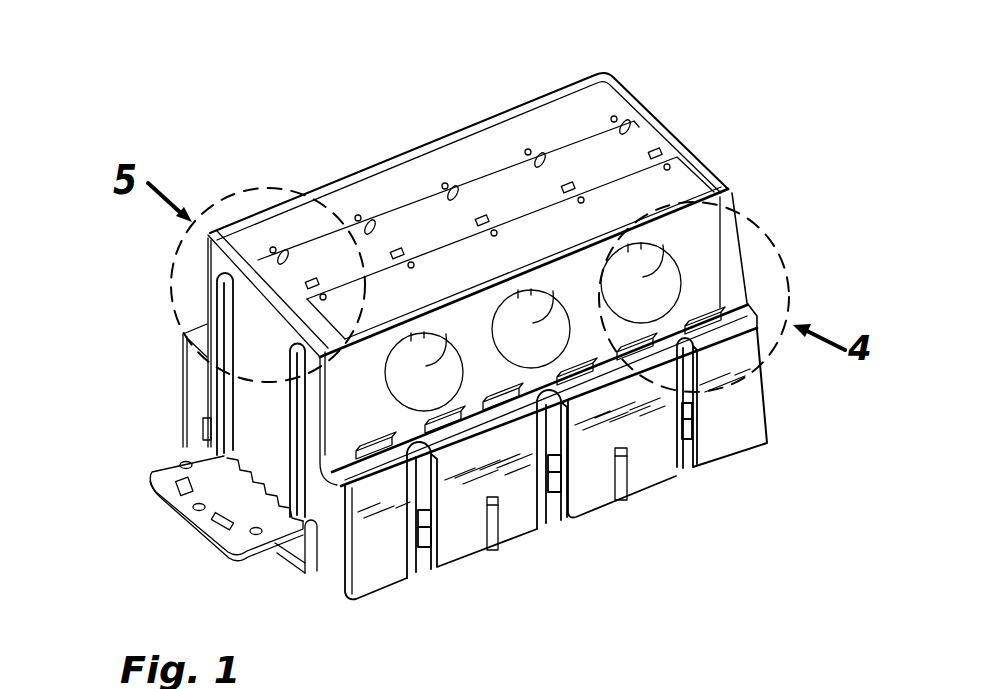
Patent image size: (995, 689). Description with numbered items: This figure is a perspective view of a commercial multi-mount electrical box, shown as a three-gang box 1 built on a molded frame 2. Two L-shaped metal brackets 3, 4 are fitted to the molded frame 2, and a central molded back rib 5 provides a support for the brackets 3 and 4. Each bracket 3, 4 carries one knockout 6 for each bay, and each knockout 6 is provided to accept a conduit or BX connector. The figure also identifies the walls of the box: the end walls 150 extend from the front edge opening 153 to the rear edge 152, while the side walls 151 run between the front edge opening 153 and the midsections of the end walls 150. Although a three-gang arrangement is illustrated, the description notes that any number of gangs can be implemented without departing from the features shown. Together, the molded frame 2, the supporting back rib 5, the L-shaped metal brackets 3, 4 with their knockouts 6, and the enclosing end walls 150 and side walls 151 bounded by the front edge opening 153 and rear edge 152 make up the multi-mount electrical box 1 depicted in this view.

The 3-gang box 1 is at (340, 119).
The molded frame 2 is at (382, 567).
The L-shaped metal bracket 3 is at (498, 143).
The L-shaped metal bracket 4 is at (681, 185).
The central molded back rib 5 is at (582, 165).
The knockout 6 is at (427, 366).
The end wall 150 is at (260, 417).
The side wall 151 is at (183, 386).
The rear edge 152 is at (243, 255).
The front edge opening 153 is at (732, 462).